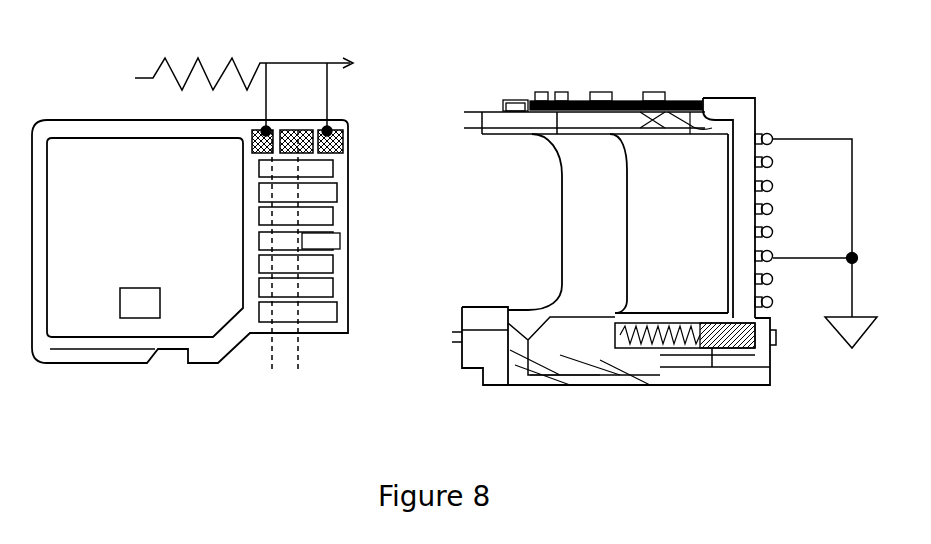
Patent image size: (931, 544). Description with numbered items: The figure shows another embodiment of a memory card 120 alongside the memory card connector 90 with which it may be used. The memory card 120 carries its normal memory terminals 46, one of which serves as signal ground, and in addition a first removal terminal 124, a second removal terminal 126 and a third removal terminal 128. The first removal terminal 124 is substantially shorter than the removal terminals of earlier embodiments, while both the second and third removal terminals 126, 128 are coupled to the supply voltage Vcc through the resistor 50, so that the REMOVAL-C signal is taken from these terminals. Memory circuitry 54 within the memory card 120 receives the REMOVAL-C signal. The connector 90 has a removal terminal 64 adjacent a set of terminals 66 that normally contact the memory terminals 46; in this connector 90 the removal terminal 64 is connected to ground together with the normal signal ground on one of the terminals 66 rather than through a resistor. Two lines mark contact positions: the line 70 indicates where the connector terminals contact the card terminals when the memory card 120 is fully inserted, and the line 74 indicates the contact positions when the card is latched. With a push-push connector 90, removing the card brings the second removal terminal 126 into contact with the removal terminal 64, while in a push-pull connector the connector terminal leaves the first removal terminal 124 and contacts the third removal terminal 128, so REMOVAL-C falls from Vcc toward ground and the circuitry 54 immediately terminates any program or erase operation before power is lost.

The resistor 50 is at (199, 59).
The second removal terminal 126 is at (255, 131).
The first removal terminal 124 is at (288, 130).
The third removal terminal 128 is at (336, 131).
The memory card 120 is at (190, 241).
The memory circuitry 54 is at (140, 303).
The memory terminals 46 is at (355, 160).
The line 70 is at (272, 345).
The line 74 is at (298, 345).
The memory card connector 90 is at (614, 238).
The removal terminal 64 is at (797, 138).
The terminals 66 is at (775, 153).